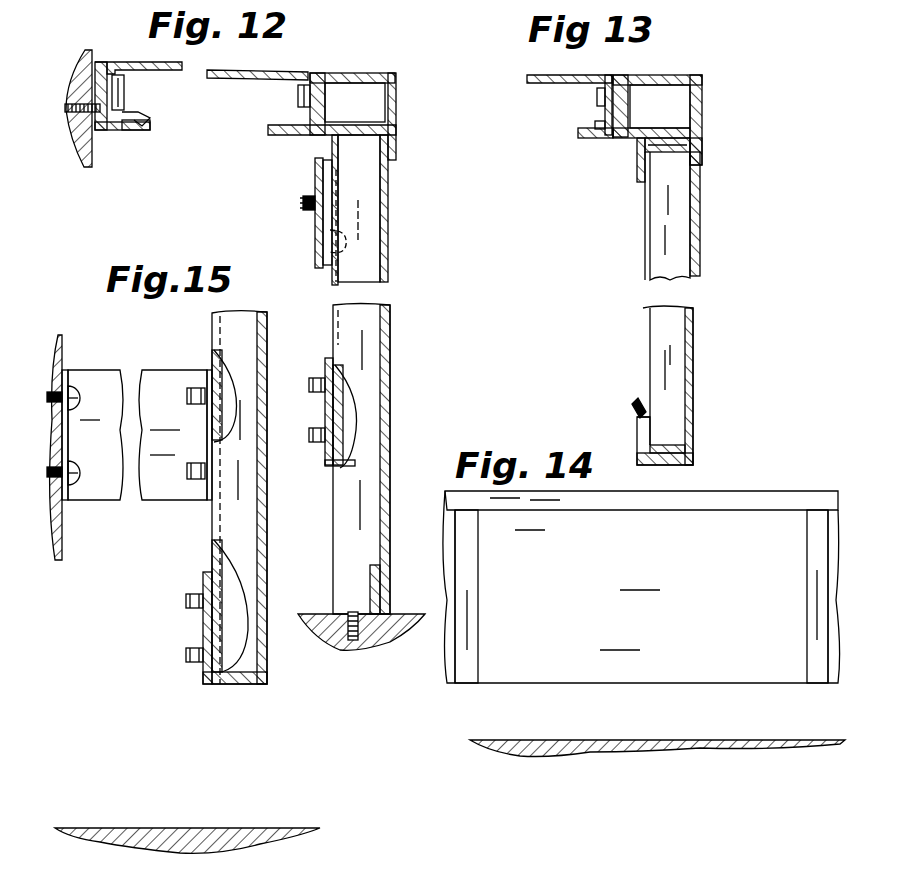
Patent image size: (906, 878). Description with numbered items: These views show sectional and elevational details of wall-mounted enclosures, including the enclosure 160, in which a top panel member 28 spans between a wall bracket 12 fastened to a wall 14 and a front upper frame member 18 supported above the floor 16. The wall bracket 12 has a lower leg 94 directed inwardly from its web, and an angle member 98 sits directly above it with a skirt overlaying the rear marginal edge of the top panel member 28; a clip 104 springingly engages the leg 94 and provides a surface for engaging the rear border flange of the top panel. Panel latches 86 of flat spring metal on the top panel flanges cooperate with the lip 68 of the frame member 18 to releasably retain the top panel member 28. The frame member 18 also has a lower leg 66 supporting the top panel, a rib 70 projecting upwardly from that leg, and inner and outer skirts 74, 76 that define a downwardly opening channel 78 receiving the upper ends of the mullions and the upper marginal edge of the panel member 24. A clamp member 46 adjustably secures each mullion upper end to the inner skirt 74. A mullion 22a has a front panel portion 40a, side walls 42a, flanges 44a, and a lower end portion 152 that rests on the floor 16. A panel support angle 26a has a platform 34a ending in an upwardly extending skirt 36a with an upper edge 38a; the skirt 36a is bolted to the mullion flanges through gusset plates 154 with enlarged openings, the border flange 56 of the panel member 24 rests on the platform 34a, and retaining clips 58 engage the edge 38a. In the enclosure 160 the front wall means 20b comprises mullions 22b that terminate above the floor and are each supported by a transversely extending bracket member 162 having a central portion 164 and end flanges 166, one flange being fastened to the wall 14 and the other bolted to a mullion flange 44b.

In FIG. 12, the wall bracket 12 is at (97, 132).
In FIG. 12, the wall 14 is at (98, 60).
In FIG. 15, the wall 14 is at (70, 362).
In FIG. 14, the floor 16 is at (495, 742).
In FIG. 15, the floor 16 is at (388, 622).
In FIG. 12, the front upper frame member 18 is at (380, 73).
In FIG. 13, the front upper frame member 18 is at (680, 76).
In FIG. 14, the front upper frame member 18 is at (667, 500).
In FIG. 14, the front wall means 20b is at (545, 640).
In FIG. 15, the mullion 22a is at (392, 362).
In FIG. 14, the mullion 22b is at (820, 605).
In FIG. 15, the mullion 22b is at (268, 560).
In FIG. 13, the panel member 24 is at (701, 226).
In FIG. 14, the panel member 24 is at (832, 556).
In FIG. 13, the panel support angle 26a is at (645, 447).
In FIG. 14, the panel support angle 26a is at (532, 684).
In FIG. 15, the panel support angle 26a is at (215, 688).
In FIG. 12, the top panel member 28 is at (262, 70).
In FIG. 13, the top panel member 28 is at (540, 75).
In FIG. 13, the platform 34a is at (693, 456).
In FIG. 15, the platform 34a is at (238, 675).
In FIG. 13, the skirt 36a is at (652, 432).
In FIG. 15, the skirt 36a is at (216, 637).
In FIG. 13, the upper edge 38a is at (640, 412).
In FIG. 15, the upper edge 38a is at (206, 618).
In FIG. 15, the front panel portion 40a is at (392, 322).
In FIG. 12, the side wall 42a is at (375, 264).
In FIG. 12, the flange 44a is at (330, 244).
In FIG. 15, the mullion flange 44b is at (212, 362).
In FIG. 12, the clamp member 46 is at (315, 172).
In FIG. 13, the border flange 56 is at (656, 248).
In FIG. 13, the retaining clip 58 is at (636, 408).
In FIG. 13, the lower leg 66 is at (580, 138).
In FIG. 13, the lip 68 is at (613, 76).
In FIG. 13, the rib 70 is at (595, 123).
In FIG. 13, the inner skirt 74 is at (637, 172).
In FIG. 13, the outer skirt 76 is at (702, 152).
In FIG. 12, the channel 78 is at (365, 150).
In FIG. 13, the channel 78 is at (672, 142).
In FIG. 12, the panel latch 86 is at (125, 92).
In FIG. 13, the panel latch 86 is at (597, 97).
In FIG. 12, the lower leg 94 is at (118, 130).
In FIG. 12, the angle member 98 is at (108, 64).
In FIG. 12, the clip 104 is at (150, 124).
In FIG. 15, the lower end portion 152 is at (390, 546).
In FIG. 15, the gusset plate 154 is at (202, 580).
In FIG. 14, the enclosure 160 is at (748, 470).
In FIG. 15, the bracket member 162 is at (92, 372).
In FIG. 15, the central portion 164 is at (112, 505).
In FIG. 15, the end flange 166 is at (68, 500).